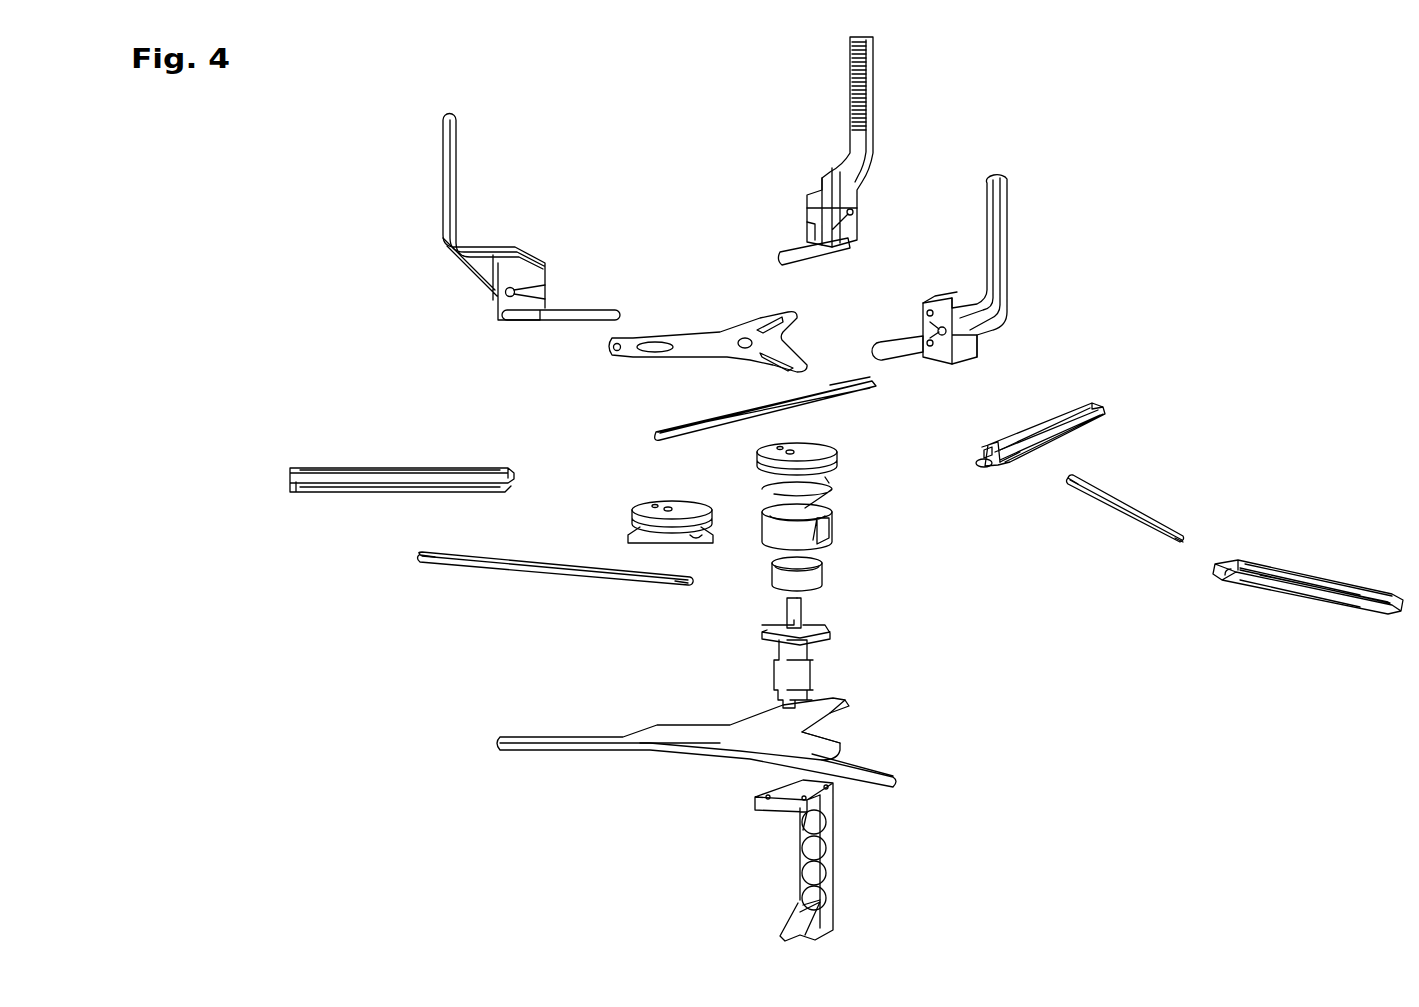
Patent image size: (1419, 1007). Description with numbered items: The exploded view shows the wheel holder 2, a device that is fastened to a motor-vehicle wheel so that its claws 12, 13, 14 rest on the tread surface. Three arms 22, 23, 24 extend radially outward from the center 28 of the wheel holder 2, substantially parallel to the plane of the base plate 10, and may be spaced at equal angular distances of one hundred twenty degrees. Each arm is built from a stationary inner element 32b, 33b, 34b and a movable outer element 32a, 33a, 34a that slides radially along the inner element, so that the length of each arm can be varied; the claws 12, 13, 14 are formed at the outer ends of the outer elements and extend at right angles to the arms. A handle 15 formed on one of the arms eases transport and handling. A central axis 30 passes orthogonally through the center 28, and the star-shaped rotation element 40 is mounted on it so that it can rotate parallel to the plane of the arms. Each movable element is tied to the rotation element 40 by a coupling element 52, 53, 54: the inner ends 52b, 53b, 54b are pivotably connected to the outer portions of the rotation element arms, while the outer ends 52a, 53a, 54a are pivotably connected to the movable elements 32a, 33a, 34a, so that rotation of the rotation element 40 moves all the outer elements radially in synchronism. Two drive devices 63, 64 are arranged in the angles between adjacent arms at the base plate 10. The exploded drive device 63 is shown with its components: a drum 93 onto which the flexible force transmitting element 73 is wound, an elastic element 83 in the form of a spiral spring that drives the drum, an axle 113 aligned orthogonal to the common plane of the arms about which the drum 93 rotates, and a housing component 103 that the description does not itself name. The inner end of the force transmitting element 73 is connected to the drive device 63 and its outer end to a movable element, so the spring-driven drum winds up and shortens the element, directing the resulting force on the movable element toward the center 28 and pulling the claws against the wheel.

The wheel holder 2 is at (1225, 191).
The base plate 10 is at (862, 732).
The claw 12 is at (900, 93).
The claw 13 is at (1030, 208).
The claw 14 is at (490, 169).
The handle 15 is at (847, 879).
The arm 22 is at (1110, 388).
The arm 23 is at (1257, 620).
The arm 24 is at (287, 512).
The center 28 is at (711, 770).
The central axis 30 is at (797, 677).
The movable outer element 32a is at (1068, 408).
The stationary inner element 32b is at (1005, 465).
The movable outer element 33a is at (1317, 577).
The stationary inner element 33b is at (1294, 602).
The movable outer element 34a is at (357, 469).
The stationary inner element 34b is at (330, 492).
The rotation element 40 is at (707, 316).
The coupling element 52 is at (658, 412).
The outer end of coupling element 52a is at (831, 379).
The inner end of coupling element 52b is at (630, 433).
The coupling element 53 is at (1128, 531).
The outer end of coupling element 53a is at (1184, 522).
The inner end of coupling element 53b is at (1094, 467).
The coupling element 54 is at (535, 595).
The outer end of coupling element 54a is at (435, 582).
The inner end of coupling element 54b is at (673, 609).
The drive device 63 is at (751, 579).
The drive device 64 is at (624, 511).
The force transmitting element 73 is at (847, 495).
The elastic element 83 is at (845, 577).
The drum 93 is at (849, 457).
The housing cup 103 is at (845, 531).
The axle 113 is at (845, 636).